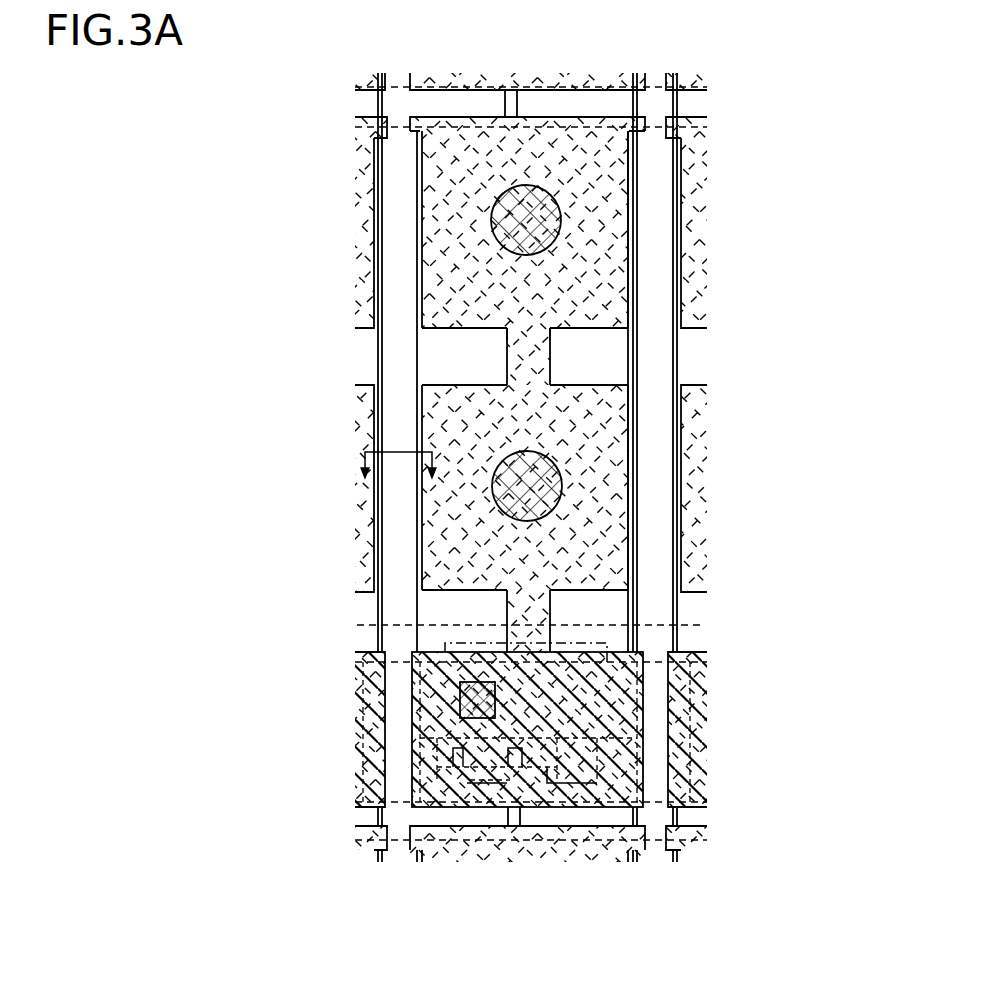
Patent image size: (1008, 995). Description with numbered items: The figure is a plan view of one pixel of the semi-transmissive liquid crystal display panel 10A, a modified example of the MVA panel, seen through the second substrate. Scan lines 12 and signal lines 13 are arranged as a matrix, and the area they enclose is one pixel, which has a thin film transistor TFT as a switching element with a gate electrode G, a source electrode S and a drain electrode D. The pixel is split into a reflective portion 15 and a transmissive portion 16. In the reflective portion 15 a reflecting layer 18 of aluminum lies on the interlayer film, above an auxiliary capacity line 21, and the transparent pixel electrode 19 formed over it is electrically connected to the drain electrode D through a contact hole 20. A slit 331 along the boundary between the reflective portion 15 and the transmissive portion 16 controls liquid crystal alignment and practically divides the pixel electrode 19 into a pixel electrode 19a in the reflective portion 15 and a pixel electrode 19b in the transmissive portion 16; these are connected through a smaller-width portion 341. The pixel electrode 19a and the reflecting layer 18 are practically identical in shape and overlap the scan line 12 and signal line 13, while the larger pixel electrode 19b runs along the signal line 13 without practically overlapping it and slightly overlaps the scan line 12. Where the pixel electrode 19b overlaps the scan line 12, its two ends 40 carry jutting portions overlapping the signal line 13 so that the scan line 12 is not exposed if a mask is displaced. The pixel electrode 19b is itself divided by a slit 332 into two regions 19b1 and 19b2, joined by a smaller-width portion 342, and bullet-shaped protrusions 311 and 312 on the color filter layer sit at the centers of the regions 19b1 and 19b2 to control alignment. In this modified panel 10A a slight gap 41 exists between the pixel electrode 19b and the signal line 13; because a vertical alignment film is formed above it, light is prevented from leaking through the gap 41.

The semi-transmissive liquid crystal display panel 10A is at (329, 72).
The scan line 12 is at (587, 104).
The signal line 13 is at (396, 252).
The reflective portion 15 is at (600, 668).
The transmissive portion 16 is at (603, 523).
The reflecting layer 18 is at (626, 739).
The pixel electrode 19 is at (612, 178).
The pixel electrode formed in the reflective portion 19a is at (618, 697).
The pixel electrode formed in the transmissive portion 19b is at (661, 360).
The region of the pixel electrode 19b1 is at (610, 403).
The region of the pixel electrode 19b2 is at (612, 296).
The contact hole 20 is at (460, 698).
The auxiliary capacity line 21 is at (425, 645).
The protrusion 311 is at (562, 490).
The protrusion 312 is at (560, 222).
The slit 331 is at (425, 603).
The slit 332 is at (460, 357).
The smaller-width portion 341 is at (518, 612).
The smaller-width portion 342 is at (507, 350).
The ends 40 is at (372, 140).
The gap 41 is at (638, 198).
The gate electrode G is at (471, 808).
The source electrode S is at (493, 820).
The drain electrode D is at (510, 820).
The thin film transistor TFT is at (552, 916).